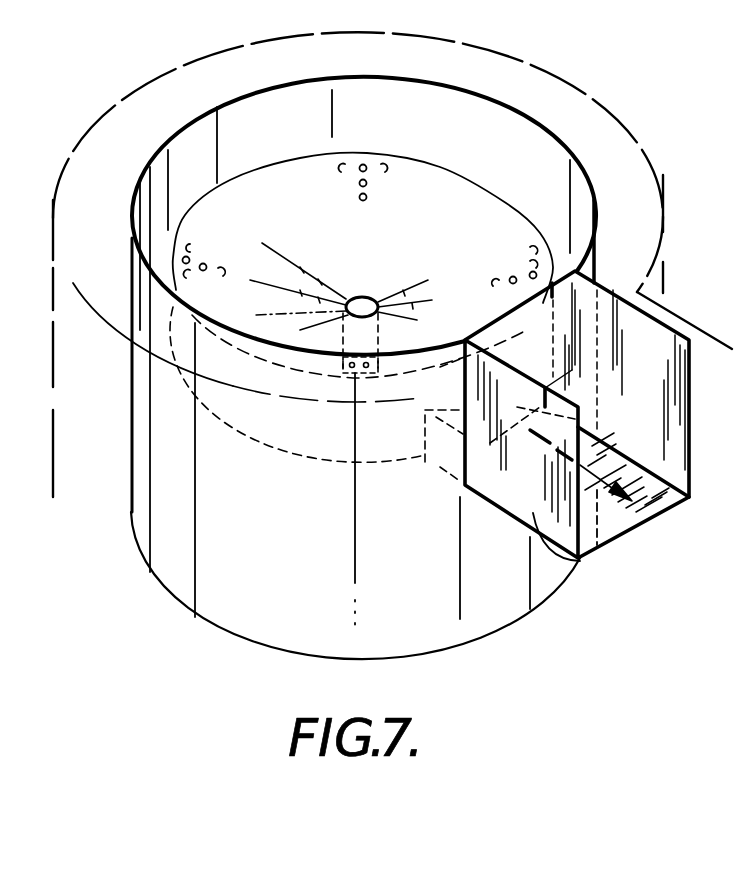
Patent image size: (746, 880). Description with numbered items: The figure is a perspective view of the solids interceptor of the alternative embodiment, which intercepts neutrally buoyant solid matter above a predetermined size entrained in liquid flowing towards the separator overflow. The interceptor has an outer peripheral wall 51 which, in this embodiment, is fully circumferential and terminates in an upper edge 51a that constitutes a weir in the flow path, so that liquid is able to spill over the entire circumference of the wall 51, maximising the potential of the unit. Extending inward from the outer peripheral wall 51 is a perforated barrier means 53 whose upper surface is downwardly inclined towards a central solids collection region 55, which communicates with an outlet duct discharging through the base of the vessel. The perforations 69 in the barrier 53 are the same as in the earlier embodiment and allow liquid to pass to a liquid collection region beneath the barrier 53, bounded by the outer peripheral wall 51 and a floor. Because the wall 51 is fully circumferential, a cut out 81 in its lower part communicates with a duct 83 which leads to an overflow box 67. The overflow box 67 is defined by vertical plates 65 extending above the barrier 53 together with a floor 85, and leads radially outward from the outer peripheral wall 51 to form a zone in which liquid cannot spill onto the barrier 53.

The outer peripheral wall 51 is at (320, 430).
The upper edge 51a is at (174, 270).
The perforated barrier means 53 is at (227, 222).
The central solids collection region 55 is at (366, 306).
The vertical plates 65 is at (580, 561).
The overflow box 67 is at (622, 353).
The perforations 69 is at (372, 155).
The cut out 81 is at (386, 447).
The duct 83 is at (445, 443).
The floor 85 is at (640, 530).